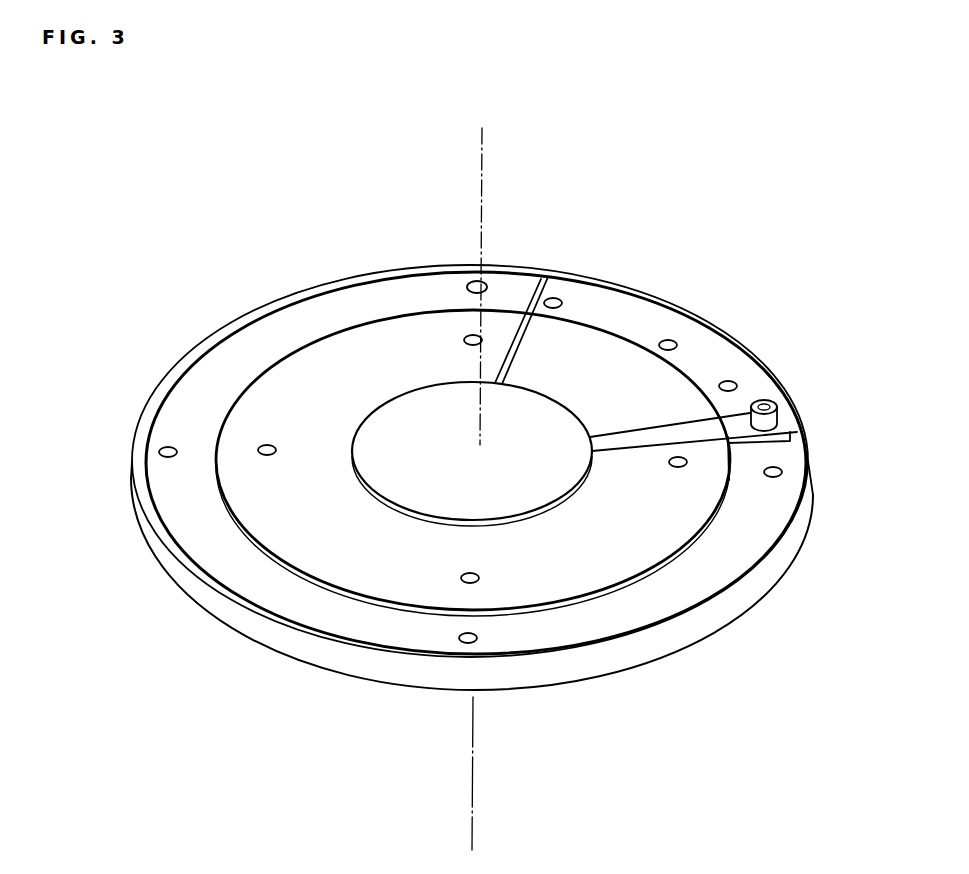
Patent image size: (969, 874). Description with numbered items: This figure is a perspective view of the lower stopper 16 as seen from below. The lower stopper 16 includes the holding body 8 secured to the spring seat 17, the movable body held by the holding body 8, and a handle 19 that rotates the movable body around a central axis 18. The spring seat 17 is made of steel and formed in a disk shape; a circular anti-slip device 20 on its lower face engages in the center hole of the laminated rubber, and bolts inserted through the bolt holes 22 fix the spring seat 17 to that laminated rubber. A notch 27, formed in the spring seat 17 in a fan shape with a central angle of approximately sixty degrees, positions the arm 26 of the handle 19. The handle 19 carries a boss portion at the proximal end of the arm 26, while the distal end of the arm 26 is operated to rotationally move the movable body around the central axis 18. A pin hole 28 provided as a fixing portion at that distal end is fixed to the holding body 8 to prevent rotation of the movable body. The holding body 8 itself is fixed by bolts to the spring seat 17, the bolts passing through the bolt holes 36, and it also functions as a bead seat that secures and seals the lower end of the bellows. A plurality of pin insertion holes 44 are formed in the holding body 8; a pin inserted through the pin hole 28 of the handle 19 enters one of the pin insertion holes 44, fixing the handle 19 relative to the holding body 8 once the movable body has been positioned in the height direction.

The holding body 8 is at (355, 278).
The lower stopper 16 is at (652, 236).
The spring seat 17 is at (300, 308).
The central axis 18 is at (488, 148).
The handle 19 is at (632, 405).
The anti-slip device 20 is at (436, 500).
The bolt holes 22 is at (270, 449).
The arm 26 is at (677, 428).
The notch 27 is at (630, 328).
The pin hole 28 is at (768, 408).
The bolt holes 36 is at (172, 451).
The pin insertion holes 44 is at (558, 299).